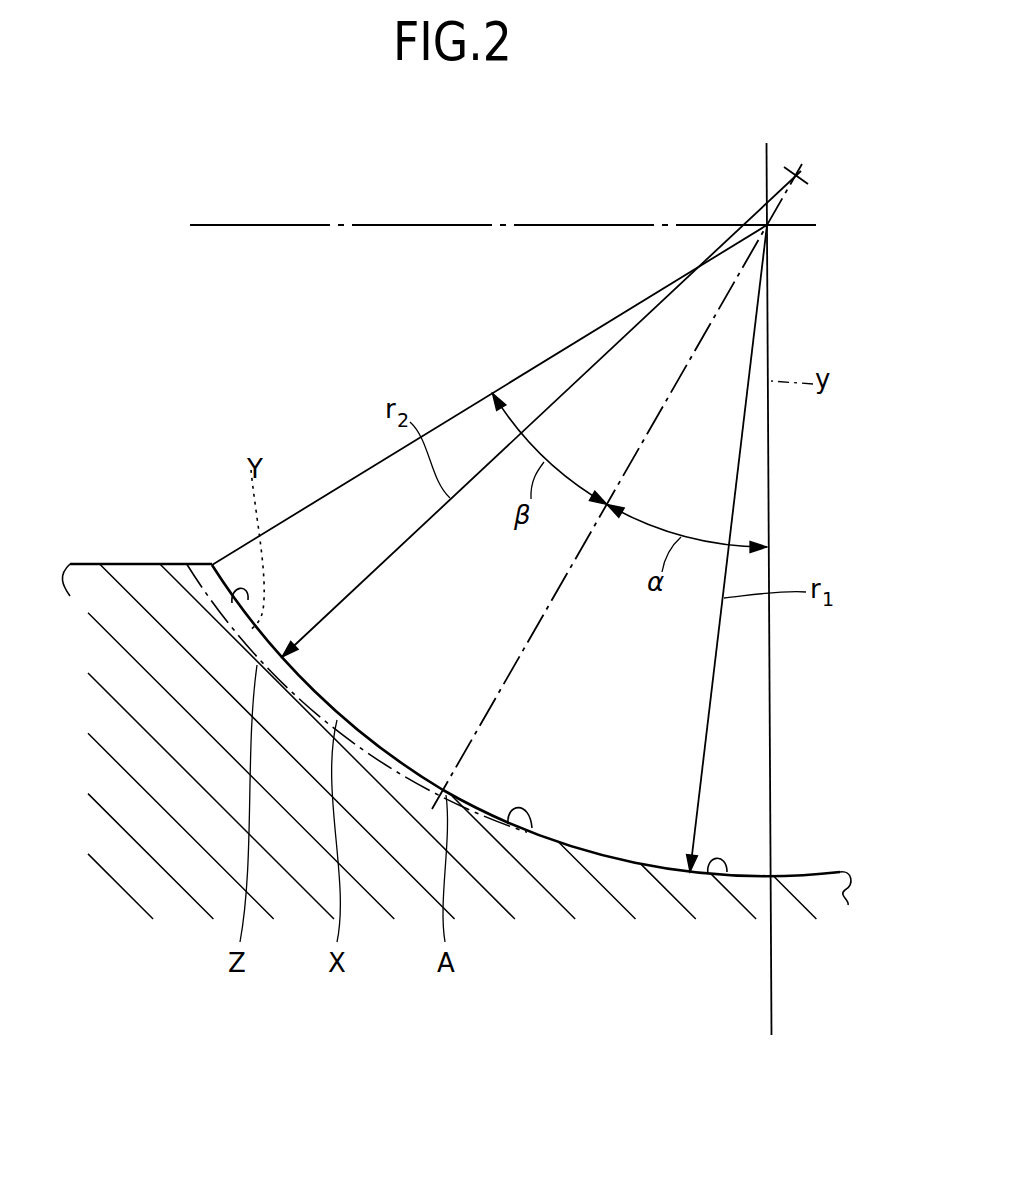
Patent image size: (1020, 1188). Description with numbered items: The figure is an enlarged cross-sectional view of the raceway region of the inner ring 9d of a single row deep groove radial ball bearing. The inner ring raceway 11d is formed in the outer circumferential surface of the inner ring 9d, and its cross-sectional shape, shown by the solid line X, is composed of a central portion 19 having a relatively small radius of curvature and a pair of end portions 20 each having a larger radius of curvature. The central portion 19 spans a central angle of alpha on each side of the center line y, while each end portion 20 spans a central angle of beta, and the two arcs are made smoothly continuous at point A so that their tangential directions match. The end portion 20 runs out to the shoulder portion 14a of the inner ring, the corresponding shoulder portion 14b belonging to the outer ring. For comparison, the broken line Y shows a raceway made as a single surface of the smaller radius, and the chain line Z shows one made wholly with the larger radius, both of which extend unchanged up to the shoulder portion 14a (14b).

The shoulder portion 14a is at (137, 548).
The shoulder portion 14b is at (112, 563).
The inner ring 9d is at (290, 900).
The inner ring raceway 11d is at (529, 832).
The central portion 19 is at (708, 876).
The end portion 20 is at (243, 610).